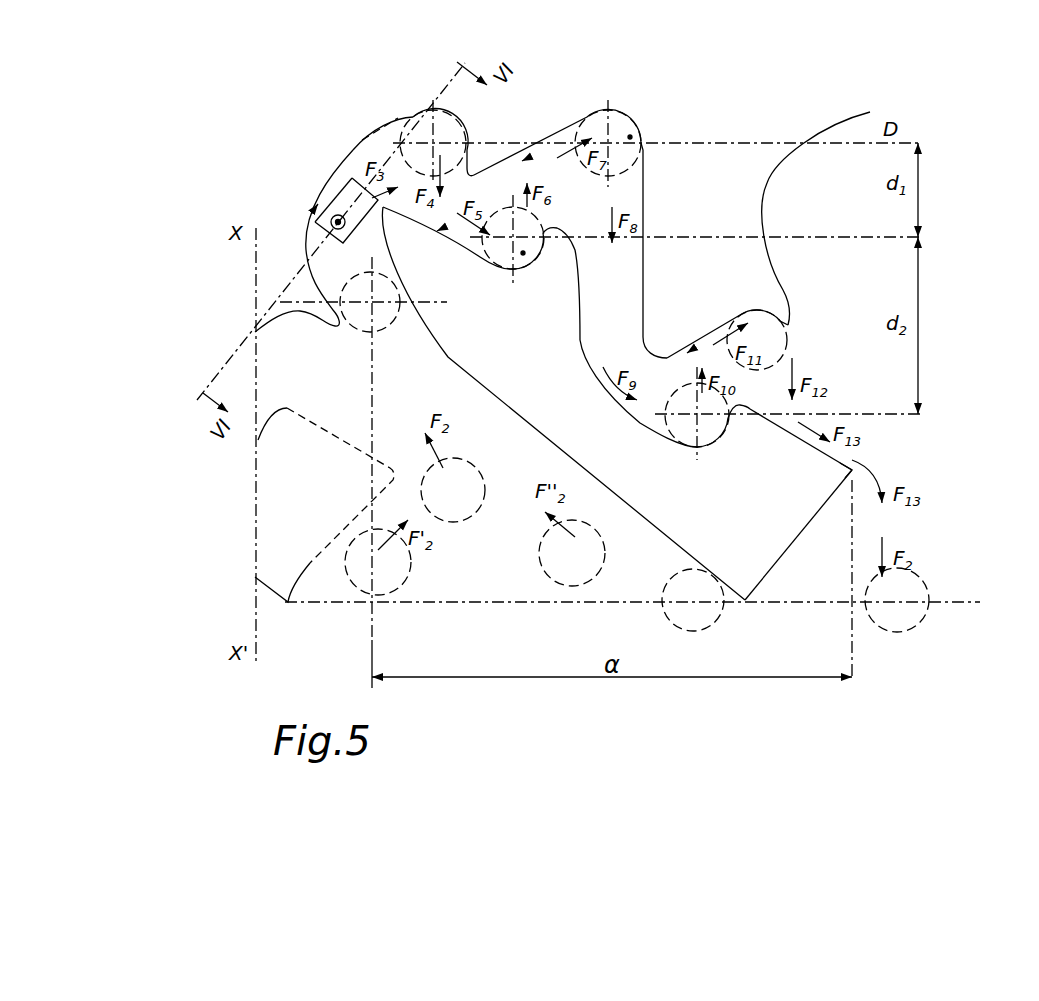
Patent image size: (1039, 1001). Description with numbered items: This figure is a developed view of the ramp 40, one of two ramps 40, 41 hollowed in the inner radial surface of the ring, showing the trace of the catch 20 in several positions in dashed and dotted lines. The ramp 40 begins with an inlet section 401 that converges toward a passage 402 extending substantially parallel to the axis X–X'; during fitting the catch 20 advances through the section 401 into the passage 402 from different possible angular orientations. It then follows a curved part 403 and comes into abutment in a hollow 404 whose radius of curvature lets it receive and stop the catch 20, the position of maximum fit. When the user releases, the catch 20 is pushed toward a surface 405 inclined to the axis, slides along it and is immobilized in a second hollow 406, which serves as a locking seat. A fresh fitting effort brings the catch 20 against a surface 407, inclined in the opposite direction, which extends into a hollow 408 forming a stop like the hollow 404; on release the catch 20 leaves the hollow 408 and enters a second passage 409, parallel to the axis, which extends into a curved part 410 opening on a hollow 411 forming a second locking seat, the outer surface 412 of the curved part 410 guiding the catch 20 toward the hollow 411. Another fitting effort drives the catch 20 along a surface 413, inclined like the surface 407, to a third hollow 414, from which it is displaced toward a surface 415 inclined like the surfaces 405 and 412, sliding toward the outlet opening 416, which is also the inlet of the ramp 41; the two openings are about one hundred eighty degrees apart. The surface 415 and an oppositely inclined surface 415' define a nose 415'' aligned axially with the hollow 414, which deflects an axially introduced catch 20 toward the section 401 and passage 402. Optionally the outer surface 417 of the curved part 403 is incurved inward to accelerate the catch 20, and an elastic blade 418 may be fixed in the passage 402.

The catch 20 is at (617, 103).
The ramp 40 is at (639, 408).
The ramp 41 is at (268, 345).
The inlet section 401 is at (498, 526).
The passage 402 is at (315, 221).
The curved part 403 is at (333, 168).
The hollow 404 is at (471, 140).
The surface 405 is at (449, 232).
The second hollow 406 is at (523, 255).
The surface 407 is at (552, 138).
The hollow 408 is at (632, 137).
The second passage 409 is at (613, 293).
The curved part 410 is at (648, 372).
The hollow 411 is at (728, 447).
The outer surface 412 is at (582, 343).
The surface 413 is at (700, 357).
The third hollow 414 is at (789, 324).
The surface 415 is at (797, 455).
The surface 415' is at (825, 614).
The nose 415'' is at (932, 429).
The outlet opening 416 is at (874, 513).
The outer surface 417 is at (381, 120).
The elastic blade 418 is at (316, 205).